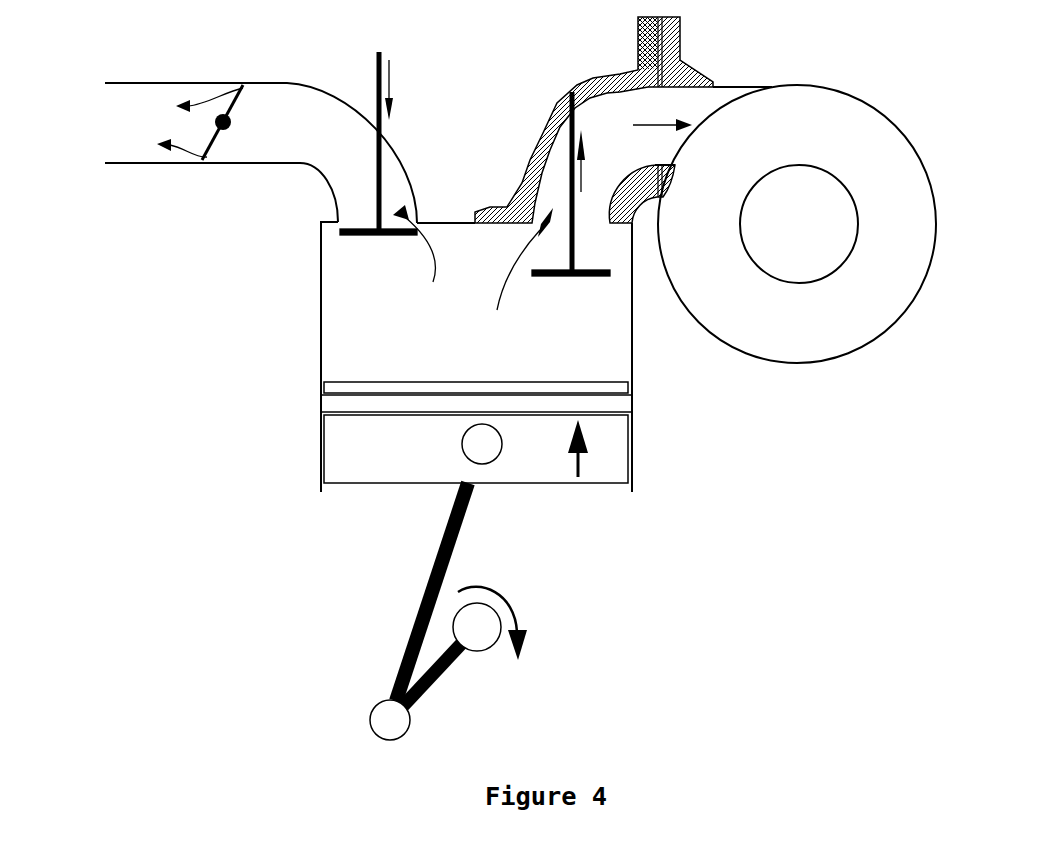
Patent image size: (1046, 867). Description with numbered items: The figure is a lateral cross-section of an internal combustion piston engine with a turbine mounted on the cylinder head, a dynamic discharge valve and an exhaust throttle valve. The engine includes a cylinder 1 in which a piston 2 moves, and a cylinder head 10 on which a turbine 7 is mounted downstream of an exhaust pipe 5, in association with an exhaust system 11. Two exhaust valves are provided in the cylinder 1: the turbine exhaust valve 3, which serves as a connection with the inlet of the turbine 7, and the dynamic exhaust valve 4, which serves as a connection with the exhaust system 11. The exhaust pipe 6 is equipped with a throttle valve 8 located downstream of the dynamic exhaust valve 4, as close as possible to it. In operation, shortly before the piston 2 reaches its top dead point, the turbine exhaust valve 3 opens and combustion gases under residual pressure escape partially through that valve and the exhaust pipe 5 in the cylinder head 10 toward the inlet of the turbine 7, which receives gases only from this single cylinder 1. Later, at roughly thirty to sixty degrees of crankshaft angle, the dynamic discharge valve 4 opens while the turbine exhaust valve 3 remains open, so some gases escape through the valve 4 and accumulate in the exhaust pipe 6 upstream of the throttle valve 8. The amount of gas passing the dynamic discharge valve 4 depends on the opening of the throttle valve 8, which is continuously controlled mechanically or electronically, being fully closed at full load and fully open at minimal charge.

The cylinder 1 is at (476, 357).
The piston 2 is at (476, 432).
The turbine exhaust valve 3 is at (583, 280).
The dynamic exhaust valve 4 is at (373, 240).
The exhaust pipe 5 is at (690, 155).
The exhaust pipe 6 is at (261, 153).
The turbine 7 is at (797, 224).
The throttle valve 8 is at (228, 134).
The cylinder head 10 is at (623, 73).
The exhaust system 11 is at (464, 197).